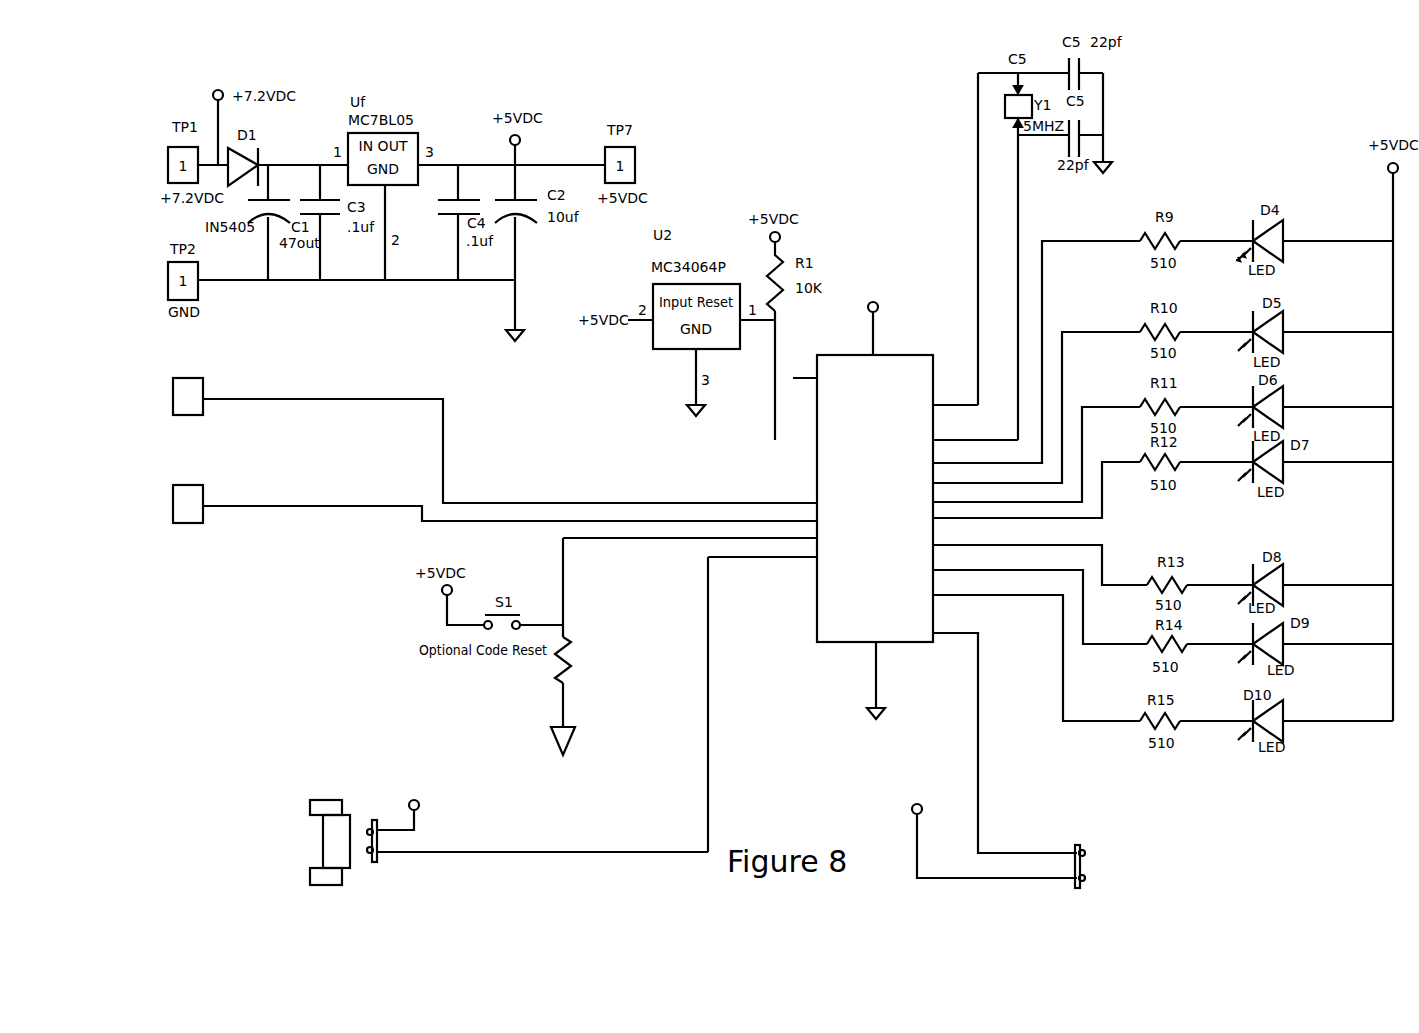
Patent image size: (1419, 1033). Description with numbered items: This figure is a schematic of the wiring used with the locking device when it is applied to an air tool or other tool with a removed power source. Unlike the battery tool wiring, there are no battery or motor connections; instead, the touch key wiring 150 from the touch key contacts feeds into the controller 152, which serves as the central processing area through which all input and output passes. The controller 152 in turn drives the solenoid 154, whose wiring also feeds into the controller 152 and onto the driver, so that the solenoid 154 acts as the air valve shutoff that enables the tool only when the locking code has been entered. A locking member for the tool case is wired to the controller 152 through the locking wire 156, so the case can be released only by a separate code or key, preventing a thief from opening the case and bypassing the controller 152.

The touch key wiring 150 is at (360, 502).
The controller 152 is at (822, 622).
The solenoid 154 is at (343, 868).
The locking wire 156 is at (1005, 851).